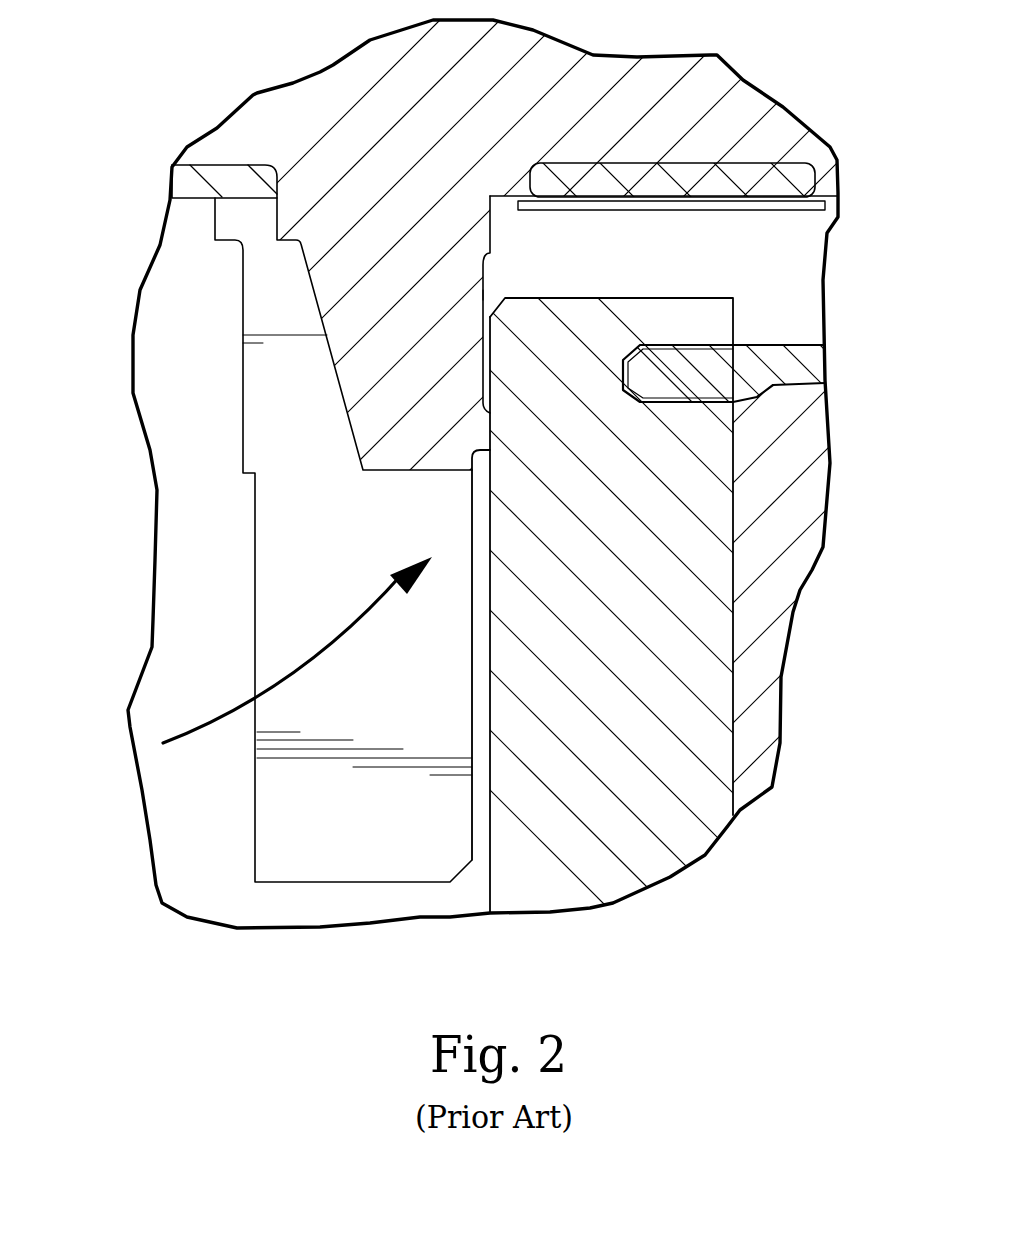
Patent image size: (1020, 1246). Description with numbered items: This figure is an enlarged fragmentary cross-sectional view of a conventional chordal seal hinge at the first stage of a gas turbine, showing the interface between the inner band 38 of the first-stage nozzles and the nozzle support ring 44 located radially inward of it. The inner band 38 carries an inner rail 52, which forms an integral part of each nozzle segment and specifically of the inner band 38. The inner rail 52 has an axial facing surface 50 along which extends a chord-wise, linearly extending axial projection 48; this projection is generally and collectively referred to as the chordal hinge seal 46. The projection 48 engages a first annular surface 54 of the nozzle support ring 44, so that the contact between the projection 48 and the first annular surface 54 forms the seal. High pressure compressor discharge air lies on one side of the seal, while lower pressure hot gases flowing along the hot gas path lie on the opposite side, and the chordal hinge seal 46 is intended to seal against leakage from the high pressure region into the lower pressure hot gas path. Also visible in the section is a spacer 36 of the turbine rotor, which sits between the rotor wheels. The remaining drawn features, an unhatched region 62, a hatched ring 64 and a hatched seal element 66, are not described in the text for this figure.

The spacer 36 is at (188, 648).
The inner band 38 is at (310, 120).
The nozzle support ring 44 is at (650, 865).
The chordal hinge seal 46 is at (176, 368).
The axial projection 48 is at (488, 432).
The axial facing surface 50 is at (483, 293).
The inner rail 52 is at (353, 267).
The first annular surface 54 is at (490, 640).
The cavity region 62 is at (661, 268).
The ring 64 is at (723, 296).
The seal 66 is at (740, 200).